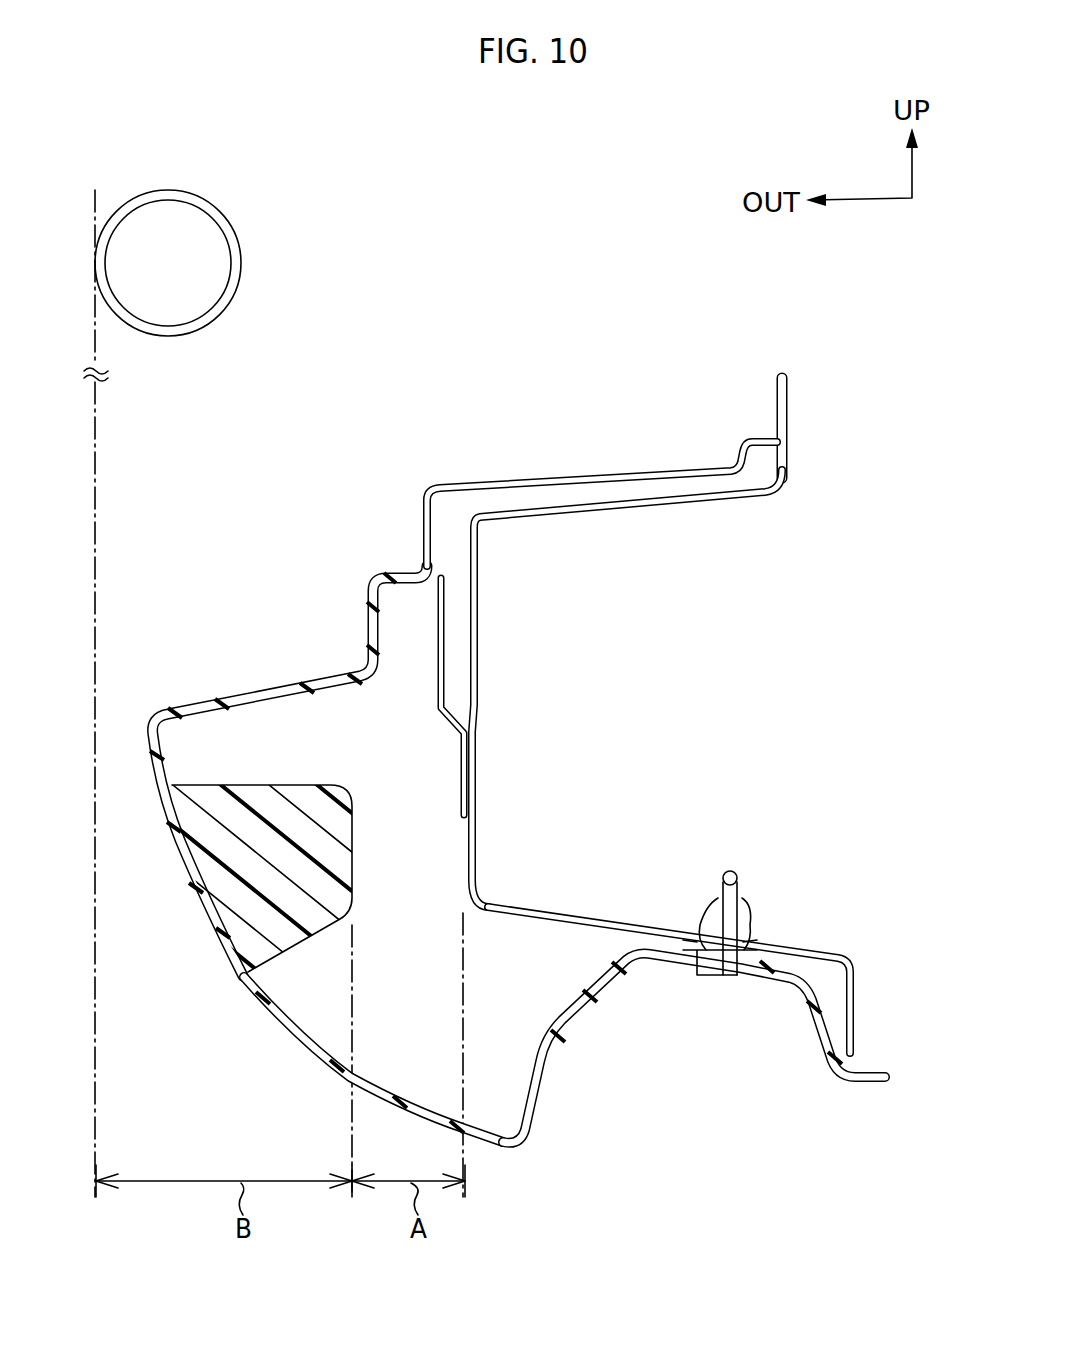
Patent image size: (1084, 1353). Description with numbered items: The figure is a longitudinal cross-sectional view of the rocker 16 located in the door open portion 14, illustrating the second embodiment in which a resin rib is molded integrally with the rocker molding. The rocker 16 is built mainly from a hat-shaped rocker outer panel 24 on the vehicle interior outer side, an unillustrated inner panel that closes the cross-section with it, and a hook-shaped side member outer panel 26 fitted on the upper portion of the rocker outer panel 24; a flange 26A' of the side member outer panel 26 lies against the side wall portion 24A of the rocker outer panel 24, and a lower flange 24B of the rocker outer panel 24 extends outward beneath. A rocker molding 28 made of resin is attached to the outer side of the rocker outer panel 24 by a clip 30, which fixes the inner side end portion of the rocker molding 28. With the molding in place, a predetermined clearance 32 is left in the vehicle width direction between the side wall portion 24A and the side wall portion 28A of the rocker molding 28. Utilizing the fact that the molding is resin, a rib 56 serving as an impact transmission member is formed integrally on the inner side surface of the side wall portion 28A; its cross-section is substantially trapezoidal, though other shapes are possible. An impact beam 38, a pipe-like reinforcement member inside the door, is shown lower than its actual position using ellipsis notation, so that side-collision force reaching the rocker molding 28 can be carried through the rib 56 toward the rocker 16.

The door open portion 14 is at (557, 389).
The rocker 16 is at (661, 715).
The rocker outer panel 24 is at (661, 715).
The side wall portion 24A is at (478, 622).
The lower flange of outer panel 24B is at (595, 920).
The side member outer panel 26 is at (573, 607).
The flange of inner panel 26A' is at (417, 696).
The rocker molding 28 is at (524, 1048).
The side wall portion 28A is at (277, 1025).
The clip 30 is at (716, 975).
The clearance 32 is at (342, 756).
The impact beam 38 is at (242, 257).
The rib 56 is at (340, 833).